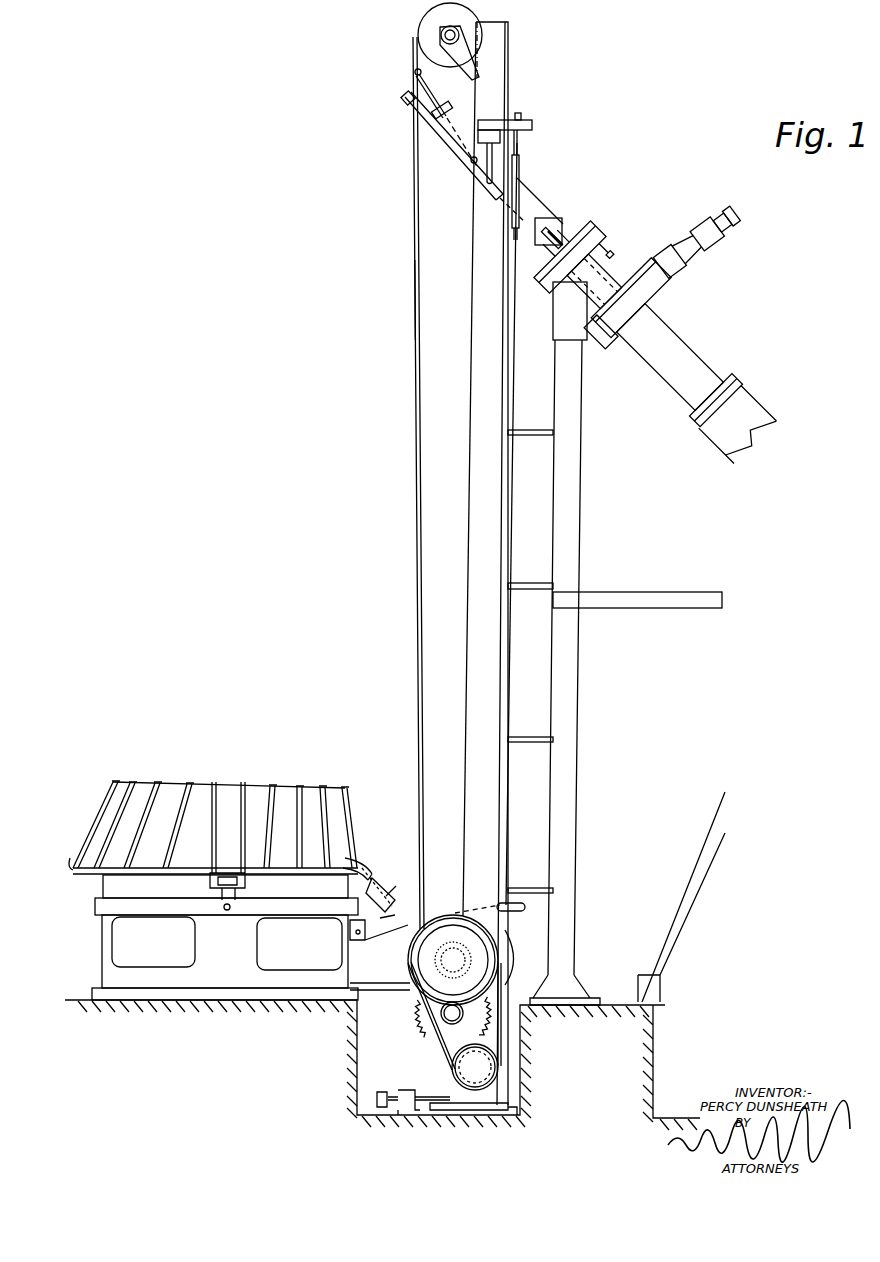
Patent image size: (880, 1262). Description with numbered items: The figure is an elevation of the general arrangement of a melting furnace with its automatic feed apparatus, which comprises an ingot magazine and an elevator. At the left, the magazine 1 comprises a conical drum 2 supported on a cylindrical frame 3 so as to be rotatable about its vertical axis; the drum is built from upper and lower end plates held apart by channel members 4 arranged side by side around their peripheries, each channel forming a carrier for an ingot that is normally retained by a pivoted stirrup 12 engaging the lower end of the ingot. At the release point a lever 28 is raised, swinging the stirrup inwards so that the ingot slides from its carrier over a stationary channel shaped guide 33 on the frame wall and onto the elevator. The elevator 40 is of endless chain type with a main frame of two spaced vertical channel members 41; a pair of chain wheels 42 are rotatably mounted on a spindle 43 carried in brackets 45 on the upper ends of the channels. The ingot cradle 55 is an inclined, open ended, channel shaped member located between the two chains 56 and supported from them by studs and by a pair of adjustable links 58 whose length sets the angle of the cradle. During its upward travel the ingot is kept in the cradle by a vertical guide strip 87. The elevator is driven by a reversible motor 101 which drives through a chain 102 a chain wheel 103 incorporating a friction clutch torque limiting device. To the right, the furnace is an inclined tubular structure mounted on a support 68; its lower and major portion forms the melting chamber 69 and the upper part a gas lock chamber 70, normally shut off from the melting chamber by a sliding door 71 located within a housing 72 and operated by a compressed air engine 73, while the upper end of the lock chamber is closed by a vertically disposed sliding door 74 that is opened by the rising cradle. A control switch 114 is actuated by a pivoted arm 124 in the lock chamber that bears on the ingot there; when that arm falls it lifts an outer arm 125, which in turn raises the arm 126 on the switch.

The magazine 1 is at (228, 864).
The conical drum 2 is at (201, 803).
The cylindrical frame 3 is at (108, 943).
The channel members 4 is at (193, 828).
The stirrup 12 is at (243, 883).
The lever 28 is at (403, 923).
The channel shaped guide 33 is at (380, 905).
The elevator 40 is at (412, 494).
The channel members 41 is at (480, 500).
The chain wheels 42 is at (462, 43).
The spindle 43 is at (441, 34).
The brackets 45 is at (416, 67).
The ingot cradle 55 is at (445, 140).
The chains 56 is at (430, 297).
The adjustable links 58 is at (432, 91).
The support 68 is at (584, 402).
The melting chamber 69 is at (718, 425).
The gas lock chamber 70 is at (532, 215).
The sliding door 71 is at (625, 333).
The housing 72 is at (653, 303).
The compressed air engine 73 is at (728, 237).
The sliding door 74 is at (523, 143).
The vertical guide strip 87 is at (513, 508).
The reversible motor 101 is at (473, 1067).
The chain 102 is at (447, 1055).
The chain wheel 103 is at (480, 955).
The control switch 114 is at (543, 232).
The pivoted arm 124 is at (608, 243).
The arm 125 is at (558, 303).
The arm 126 is at (550, 245).